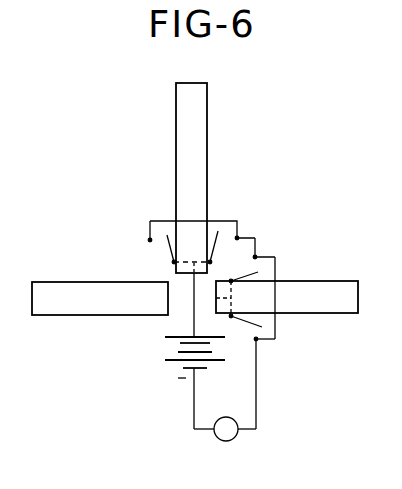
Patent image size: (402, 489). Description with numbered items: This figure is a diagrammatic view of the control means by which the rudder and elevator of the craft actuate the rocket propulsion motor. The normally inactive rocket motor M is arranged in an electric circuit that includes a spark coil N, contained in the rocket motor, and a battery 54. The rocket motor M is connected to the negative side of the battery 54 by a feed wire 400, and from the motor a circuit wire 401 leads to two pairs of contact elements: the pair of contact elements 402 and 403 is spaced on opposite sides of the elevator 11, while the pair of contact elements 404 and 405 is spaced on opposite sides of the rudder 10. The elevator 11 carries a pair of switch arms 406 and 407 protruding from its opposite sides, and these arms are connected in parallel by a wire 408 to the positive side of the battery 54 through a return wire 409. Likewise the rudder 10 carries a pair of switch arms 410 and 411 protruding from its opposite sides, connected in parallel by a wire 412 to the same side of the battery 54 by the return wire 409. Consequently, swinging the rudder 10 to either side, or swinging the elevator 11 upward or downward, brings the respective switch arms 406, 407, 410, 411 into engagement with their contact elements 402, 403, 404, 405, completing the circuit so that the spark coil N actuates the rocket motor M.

The rudder 10 is at (195, 132).
The elevator 11 is at (57, 295).
The battery 54 is at (172, 350).
The feed wire 400 is at (193, 395).
The circuit wire 401 is at (258, 400).
The contact element 402 is at (258, 341).
The contact element 403 is at (257, 256).
The contact element 404 is at (239, 236).
The contact element 405 is at (148, 240).
The switch arm 406 is at (276, 328).
The switch arm 407 is at (231, 279).
The wire 408 is at (230, 325).
The return wire 409 is at (186, 316).
The switch arm 410 is at (222, 223).
The switch arm 411 is at (168, 247).
The wire 412 is at (193, 288).
The rocket motor M is at (204, 449).
The spark coil N is at (232, 433).